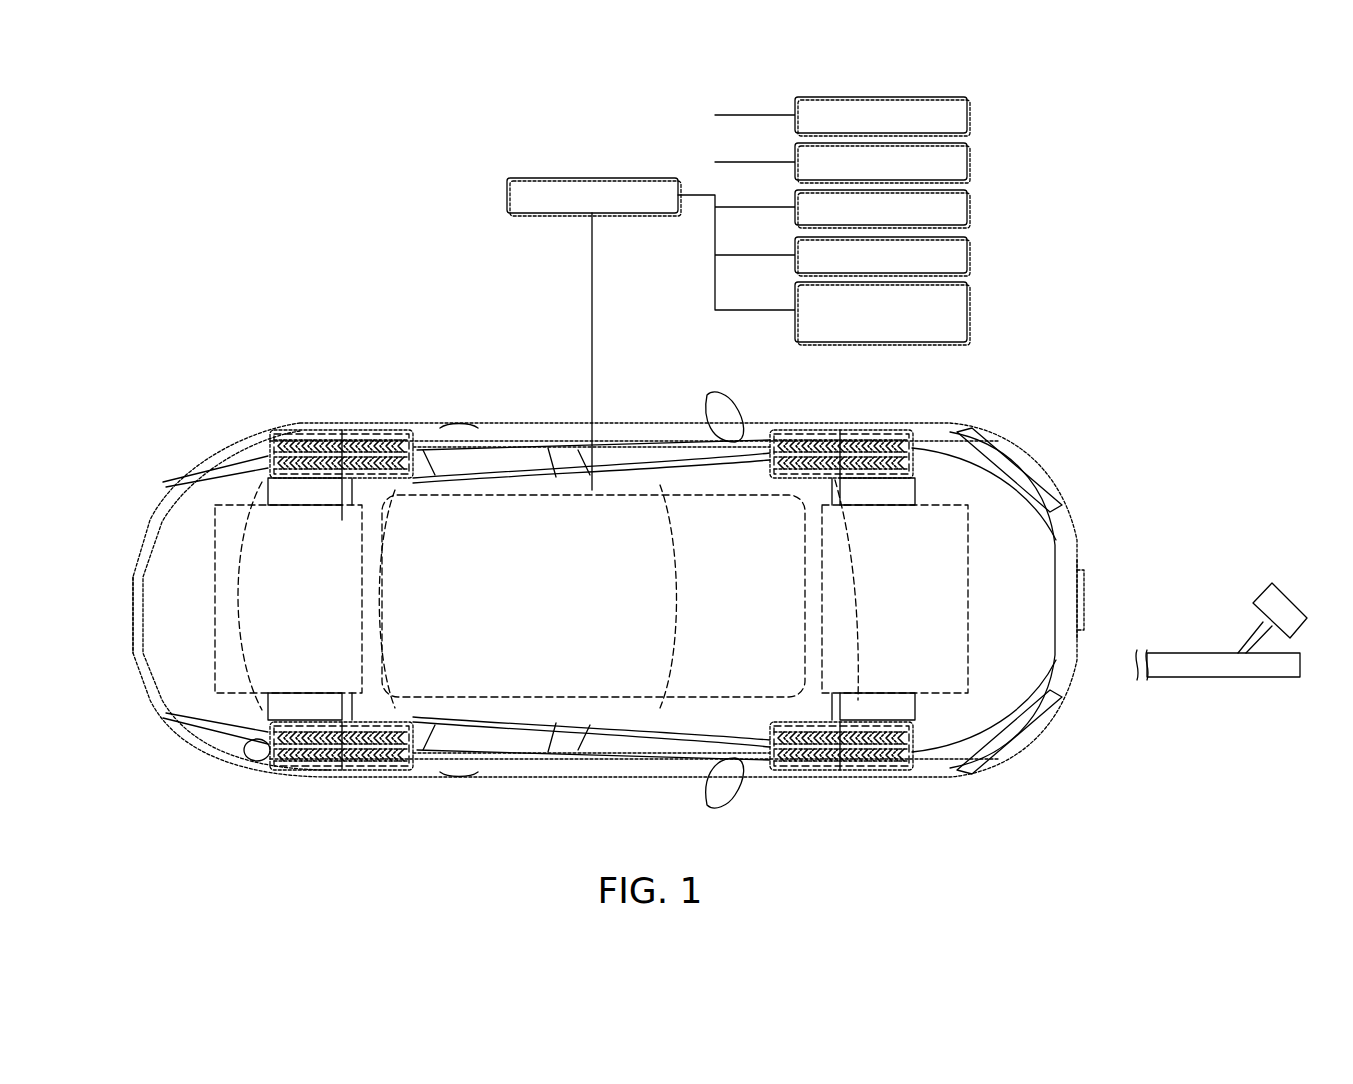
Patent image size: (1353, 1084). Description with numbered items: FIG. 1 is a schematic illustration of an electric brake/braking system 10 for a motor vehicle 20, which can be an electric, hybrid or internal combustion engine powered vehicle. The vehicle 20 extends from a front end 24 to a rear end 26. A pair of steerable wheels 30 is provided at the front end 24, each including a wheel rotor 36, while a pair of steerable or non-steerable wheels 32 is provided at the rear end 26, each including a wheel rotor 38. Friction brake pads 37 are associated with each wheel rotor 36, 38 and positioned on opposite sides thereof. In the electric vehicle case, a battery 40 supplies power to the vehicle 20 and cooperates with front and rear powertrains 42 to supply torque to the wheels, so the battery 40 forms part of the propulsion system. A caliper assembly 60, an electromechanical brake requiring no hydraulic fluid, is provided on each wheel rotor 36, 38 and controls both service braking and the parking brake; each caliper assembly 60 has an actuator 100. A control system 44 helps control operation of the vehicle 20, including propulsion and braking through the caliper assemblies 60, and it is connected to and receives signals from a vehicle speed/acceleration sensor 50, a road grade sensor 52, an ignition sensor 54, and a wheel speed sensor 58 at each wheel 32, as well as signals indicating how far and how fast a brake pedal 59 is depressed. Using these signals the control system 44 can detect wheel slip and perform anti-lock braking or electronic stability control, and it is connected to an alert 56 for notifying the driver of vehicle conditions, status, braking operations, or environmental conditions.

The electric brake/braking system 10 is at (277, 360).
The motor vehicle 20 is at (515, 810).
The front end 24 is at (1092, 556).
The rear end 26 is at (233, 433).
The steerable wheels 30 is at (833, 600).
The wheels 32 is at (361, 601).
The wheel rotor 36 is at (890, 790).
The friction brake pads 37 is at (365, 435).
The wheel rotor 38 is at (362, 600).
The battery 40 is at (607, 610).
The powertrains 42 is at (300, 610).
The control system 44 is at (507, 196).
The vehicle speed/acceleration sensor 50 is at (970, 115).
The road grade sensor 52 is at (970, 162).
The ignition sensor 54 is at (970, 207).
The alert 56 is at (970, 255).
The wheel speed sensor 58 is at (970, 310).
The brake pedal 59 is at (1227, 678).
The caliper assembly 60 is at (590, 600).
The actuator 100 is at (263, 488).